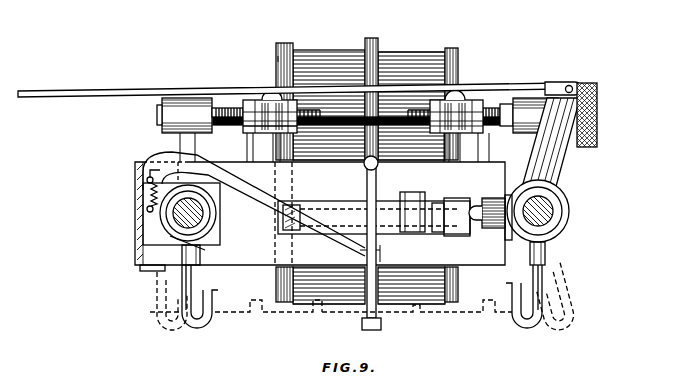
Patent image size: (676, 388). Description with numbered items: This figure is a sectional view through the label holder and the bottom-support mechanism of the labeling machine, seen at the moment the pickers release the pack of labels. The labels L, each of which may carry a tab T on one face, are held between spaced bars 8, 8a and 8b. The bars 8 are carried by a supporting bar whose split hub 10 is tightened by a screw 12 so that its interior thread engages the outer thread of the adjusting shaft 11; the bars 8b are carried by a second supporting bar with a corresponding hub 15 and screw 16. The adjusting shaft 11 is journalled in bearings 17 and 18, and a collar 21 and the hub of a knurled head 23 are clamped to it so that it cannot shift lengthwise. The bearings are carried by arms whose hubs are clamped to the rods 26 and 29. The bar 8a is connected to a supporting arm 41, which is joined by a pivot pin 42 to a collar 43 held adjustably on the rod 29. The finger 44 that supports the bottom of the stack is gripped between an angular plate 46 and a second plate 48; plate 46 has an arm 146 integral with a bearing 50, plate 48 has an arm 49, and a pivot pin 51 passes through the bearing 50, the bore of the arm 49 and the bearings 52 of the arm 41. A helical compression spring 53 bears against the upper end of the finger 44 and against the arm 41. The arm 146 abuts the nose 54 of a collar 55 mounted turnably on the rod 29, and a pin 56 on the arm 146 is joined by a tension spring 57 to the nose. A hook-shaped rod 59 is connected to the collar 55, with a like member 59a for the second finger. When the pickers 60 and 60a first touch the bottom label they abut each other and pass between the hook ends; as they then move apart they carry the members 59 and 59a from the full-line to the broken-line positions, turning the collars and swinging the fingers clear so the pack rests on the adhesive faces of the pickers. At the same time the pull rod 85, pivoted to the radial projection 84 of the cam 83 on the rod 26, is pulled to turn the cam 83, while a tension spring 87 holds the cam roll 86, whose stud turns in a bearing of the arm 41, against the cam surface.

The label L is at (420, 50).
The tab T is at (278, 60).
The spaced bars 8 is at (455, 68).
The rod 8a is at (376, 50).
The spaced bars 8b is at (290, 50).
The hub 10 is at (488, 110).
The adjusting shaft 11 is at (236, 108).
The screw 12 is at (455, 100).
The hub 15 is at (252, 130).
The screw 16 is at (272, 98).
The bearing 17 is at (522, 104).
The bearing 18 is at (163, 102).
The collar 21 is at (497, 136).
The knurled head 23 is at (598, 90).
The rod 26 is at (556, 210).
The rod 29 is at (216, 215).
The supporting arm 41 is at (137, 262).
The pivot pin 42 is at (150, 268).
The collar 43 is at (137, 228).
The finger 44 is at (364, 172).
The angular plate 46 is at (362, 256).
The plate 48 is at (381, 250).
The arm 49 is at (410, 200).
The bearing 50 is at (306, 202).
The pivot pin 51 is at (422, 212).
The bearings 52 is at (284, 225).
The helical compression spring 53 is at (378, 164).
The nose 54 is at (147, 209).
The collar 55 is at (170, 236).
The pin 56 is at (147, 180).
The tension spring 57 is at (149, 192).
The hook-shaped rod 59 is at (188, 280).
The hook-shaped rod 59a is at (548, 280).
The picker 60 is at (243, 313).
The picker 60a is at (432, 313).
The cam 83 is at (568, 216).
The radial projection 84 is at (560, 160).
The pull rod 85 is at (134, 79).
The cam roll 86 is at (509, 240).
The tension spring 87 is at (476, 214).
The arm 146 is at (170, 153).